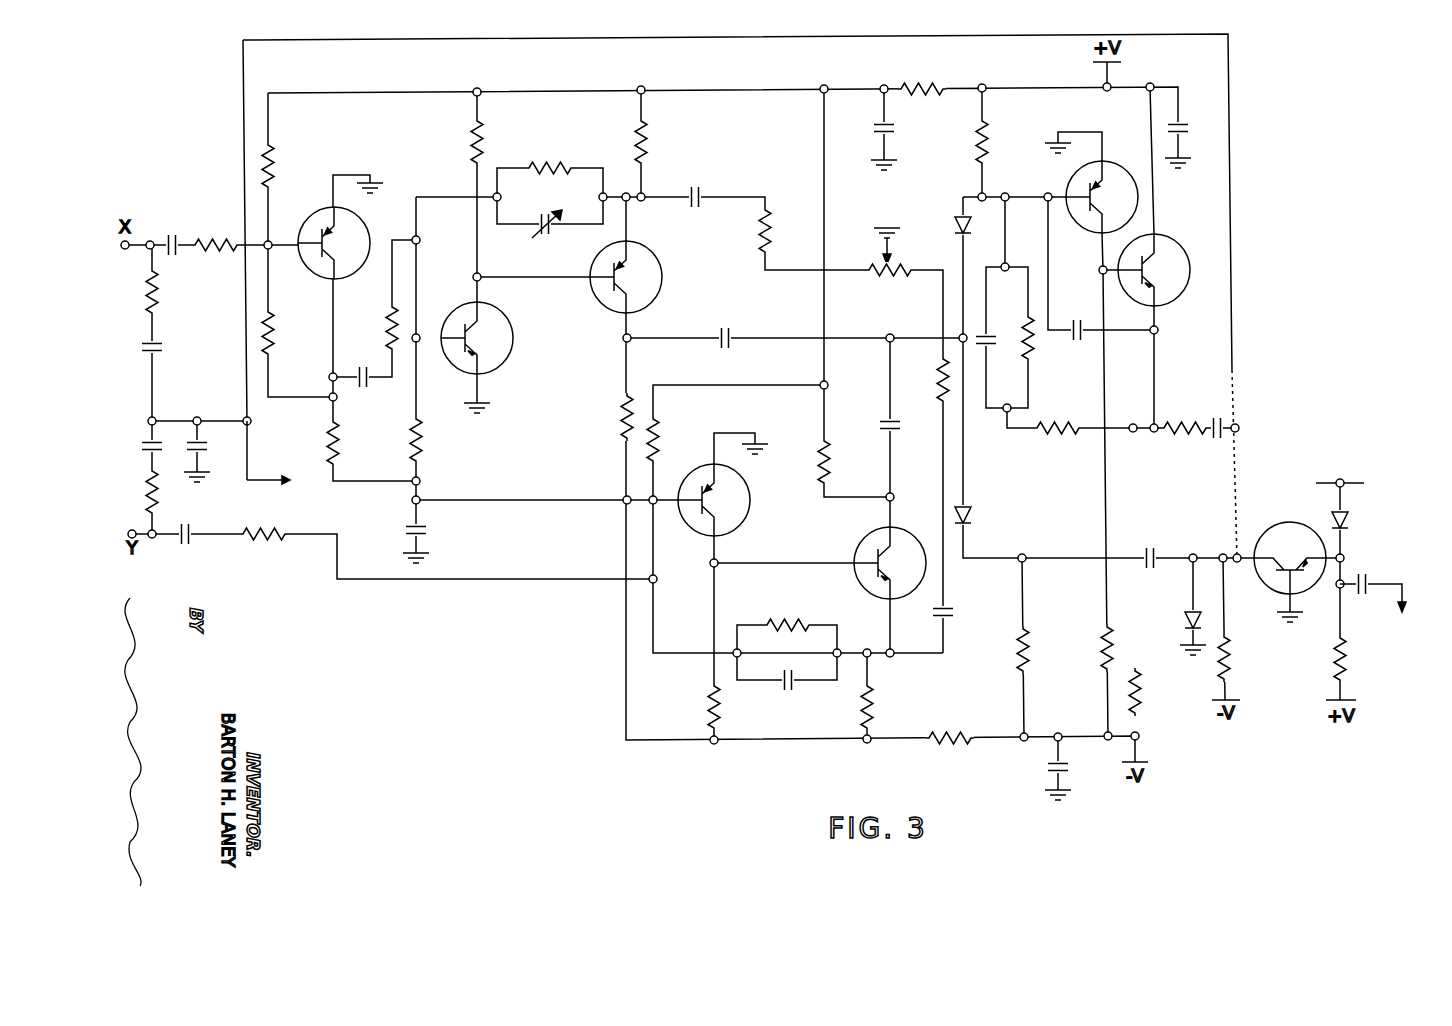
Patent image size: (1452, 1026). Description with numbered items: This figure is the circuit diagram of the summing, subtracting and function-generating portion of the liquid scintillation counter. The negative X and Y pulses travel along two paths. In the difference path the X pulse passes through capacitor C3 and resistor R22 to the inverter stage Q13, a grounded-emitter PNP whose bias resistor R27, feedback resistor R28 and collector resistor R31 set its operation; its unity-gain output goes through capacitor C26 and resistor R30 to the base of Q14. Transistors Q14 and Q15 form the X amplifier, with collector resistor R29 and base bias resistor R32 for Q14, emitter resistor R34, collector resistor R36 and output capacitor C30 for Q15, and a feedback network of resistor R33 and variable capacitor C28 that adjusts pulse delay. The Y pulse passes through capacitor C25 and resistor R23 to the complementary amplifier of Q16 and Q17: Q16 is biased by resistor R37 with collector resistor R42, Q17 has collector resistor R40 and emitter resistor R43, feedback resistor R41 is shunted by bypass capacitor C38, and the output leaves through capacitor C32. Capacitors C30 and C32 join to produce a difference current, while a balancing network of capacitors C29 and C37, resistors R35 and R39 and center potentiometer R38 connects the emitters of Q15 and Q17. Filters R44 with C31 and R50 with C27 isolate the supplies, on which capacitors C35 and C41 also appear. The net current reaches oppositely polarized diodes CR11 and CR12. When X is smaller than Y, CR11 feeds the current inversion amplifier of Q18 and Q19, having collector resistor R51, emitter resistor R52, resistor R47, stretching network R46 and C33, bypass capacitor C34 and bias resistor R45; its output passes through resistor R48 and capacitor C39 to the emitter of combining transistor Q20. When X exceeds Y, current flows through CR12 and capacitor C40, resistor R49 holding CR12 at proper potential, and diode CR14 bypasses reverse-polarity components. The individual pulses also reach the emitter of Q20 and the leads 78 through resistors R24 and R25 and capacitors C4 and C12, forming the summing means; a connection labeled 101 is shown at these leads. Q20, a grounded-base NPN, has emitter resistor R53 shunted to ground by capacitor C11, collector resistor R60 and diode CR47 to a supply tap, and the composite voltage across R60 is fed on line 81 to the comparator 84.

The capacitor C3 is at (173, 234).
The resistor R22 is at (216, 233).
The resistor R24 is at (131, 292).
The capacitor C4 is at (136, 346).
The capacitor C12 is at (132, 444).
The small capacitor C11 is at (213, 444).
The resistor R25 is at (131, 492).
The capacitor C25 is at (185, 542).
The resistor R23 is at (264, 523).
The leads 78 is at (250, 443).
The connection to element 101 is at (282, 490).
The bias resistor R27 is at (287, 166).
The feedback resistor R28 is at (287, 333).
The inverter stage Q13 is at (334, 243).
The resistor R30 is at (372, 328).
The capacitor C26 is at (361, 386).
The collector resistor R31 is at (351, 443).
The base bias resistor R32 is at (435, 440).
The filter capacitor C27 is at (436, 529).
The transistor Q14 is at (477, 338).
The collector resistor R29 is at (495, 142).
The feedback resistor R33 is at (550, 156).
The variable capacitor C28 is at (546, 216).
The emitter resistor R34 is at (658, 142).
The capacitor C29 is at (693, 185).
The resistor R35 is at (782, 231).
The transistor Q15 is at (626, 277).
The output capacitor C30 is at (725, 327).
The collector resistor R36 is at (608, 417).
The base bias resistor R37 is at (671, 440).
The transistor Q16 is at (714, 500).
The collector resistor R40 is at (843, 462).
The capacitor C32 is at (869, 420).
The center potentiometer R38 is at (890, 279).
The resistor R39 is at (925, 380).
The capacitor C37 is at (965, 610).
The filter capacitor C31 is at (865, 126).
The filter resistor R44 is at (922, 78).
The resistor R45 is at (1000, 142).
The diode CR11 is at (939, 214).
The transistor Q18 is at (1102, 197).
The capacitor C35 is at (1196, 126).
The transistor Q19 is at (1154, 270).
The capacitor C33 is at (999, 325).
The resistor R46 is at (1047, 338).
The small bypass capacitor C34 is at (1076, 318).
The resistor R47 is at (1058, 417).
The resistor R48 is at (1185, 417).
The capacitor C39 is at (1216, 436).
The diode CR12 is at (991, 513).
The capacitor C40 is at (1150, 546).
The transistor Q17 is at (890, 563).
The negative feedback resistor R41 is at (788, 614).
The high-frequency bypass capacitor C38 is at (786, 668).
The collector resistor R42 is at (734, 707).
The emitter resistor R43 is at (848, 707).
The filter resistor R50 is at (950, 726).
The high-value resistor R49 is at (1005, 650).
The collector resistor R51 is at (1088, 648).
The emitter resistor R52 is at (1153, 692).
The capacitor C41 is at (1039, 765).
The diode CR14 is at (1169, 618).
The emitter resistor R53 is at (1243, 658).
The combining amplifier Q20 is at (1290, 558).
The diode CR47 is at (1367, 519).
The collector resistor R60 is at (1362, 659).
The line 81 is at (1382, 580).
The comparator 84 is at (1401, 619).